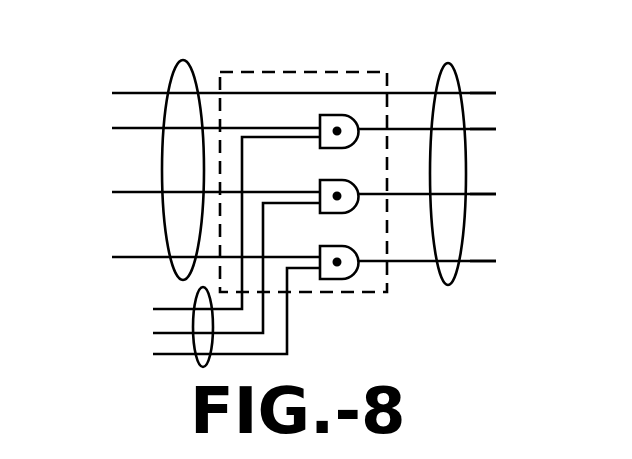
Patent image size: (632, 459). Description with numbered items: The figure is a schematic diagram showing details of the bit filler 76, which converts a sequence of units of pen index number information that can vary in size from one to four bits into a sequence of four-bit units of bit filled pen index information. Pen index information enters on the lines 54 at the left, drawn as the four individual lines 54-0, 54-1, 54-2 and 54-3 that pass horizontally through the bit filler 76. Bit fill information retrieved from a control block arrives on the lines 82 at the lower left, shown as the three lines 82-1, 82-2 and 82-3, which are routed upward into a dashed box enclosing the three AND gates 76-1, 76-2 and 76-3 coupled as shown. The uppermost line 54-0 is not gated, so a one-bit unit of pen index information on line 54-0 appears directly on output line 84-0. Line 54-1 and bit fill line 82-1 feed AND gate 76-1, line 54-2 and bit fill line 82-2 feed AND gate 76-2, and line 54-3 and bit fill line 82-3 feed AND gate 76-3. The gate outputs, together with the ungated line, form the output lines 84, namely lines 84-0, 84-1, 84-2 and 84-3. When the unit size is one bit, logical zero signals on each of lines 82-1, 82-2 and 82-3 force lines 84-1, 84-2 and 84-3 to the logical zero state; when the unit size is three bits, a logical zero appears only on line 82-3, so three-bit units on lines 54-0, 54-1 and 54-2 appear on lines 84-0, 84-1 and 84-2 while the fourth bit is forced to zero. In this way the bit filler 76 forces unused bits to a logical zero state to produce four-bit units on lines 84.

The pen index information lines 54 is at (183, 60).
The pen index information line 54-0 is at (137, 93).
The pen index information line 54-1 is at (135, 127).
The pen index information line 54-2 is at (137, 192).
The pen index information line 54-3 is at (137, 257).
The bit filler 76 is at (350, 297).
The AND gate 76-1 is at (335, 115).
The AND gate 76-2 is at (342, 180).
The AND gate 76-3 is at (336, 246).
The bit fill information lines 82 is at (195, 368).
The bit fill information line 82-1 is at (170, 309).
The bit fill information line 82-2 is at (176, 333).
The bit fill information line 82-3 is at (172, 354).
The bit filled pen index information lines 84 is at (448, 63).
The bit filled pen index information line 84-0 is at (473, 93).
The bit filled pen index information line 84-1 is at (473, 128).
The bit filled pen index information line 84-2 is at (473, 194).
The bit filled pen index information line 84-3 is at (479, 261).